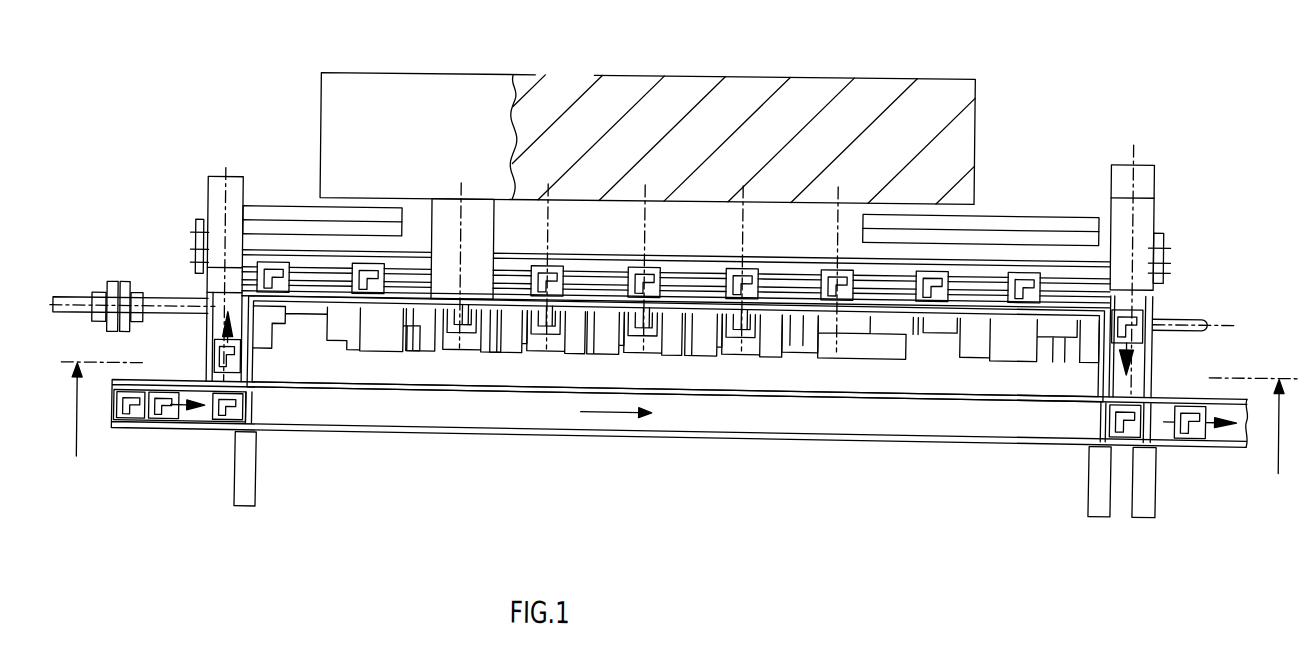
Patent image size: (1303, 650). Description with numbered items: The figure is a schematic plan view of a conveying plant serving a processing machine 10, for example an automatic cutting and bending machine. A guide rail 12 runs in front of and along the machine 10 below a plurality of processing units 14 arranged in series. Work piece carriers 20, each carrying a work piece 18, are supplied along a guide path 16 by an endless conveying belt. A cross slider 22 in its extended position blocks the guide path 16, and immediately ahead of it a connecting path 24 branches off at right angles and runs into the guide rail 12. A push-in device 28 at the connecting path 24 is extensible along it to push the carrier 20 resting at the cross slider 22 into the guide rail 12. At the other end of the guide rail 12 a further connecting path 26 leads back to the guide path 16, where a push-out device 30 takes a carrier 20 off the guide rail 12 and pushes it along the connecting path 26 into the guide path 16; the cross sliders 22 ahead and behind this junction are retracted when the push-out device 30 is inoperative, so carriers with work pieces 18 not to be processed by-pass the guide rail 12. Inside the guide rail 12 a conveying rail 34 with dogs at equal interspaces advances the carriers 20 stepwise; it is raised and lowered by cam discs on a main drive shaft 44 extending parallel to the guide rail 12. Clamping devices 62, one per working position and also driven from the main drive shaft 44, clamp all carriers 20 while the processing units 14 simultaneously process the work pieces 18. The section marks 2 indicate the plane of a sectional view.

The section line of FIG. 2 is at (678, 436).
The processing machine 10 is at (436, 92).
The guide rail 12 is at (683, 268).
The processing units 14 is at (475, 244).
The guide path 16 is at (413, 412).
The work piece 18 is at (275, 272).
The work piece carrier 20 is at (563, 266).
The cross slider 22 is at (250, 413).
The connecting path 24 is at (217, 322).
The further connecting path 26 is at (1137, 372).
The push-in device 28 is at (218, 206).
The push-out device 30 is at (1147, 212).
The conveying rail 34 is at (990, 273).
The main drive shaft 44 is at (1180, 312).
The clamping devices 62 is at (648, 324).